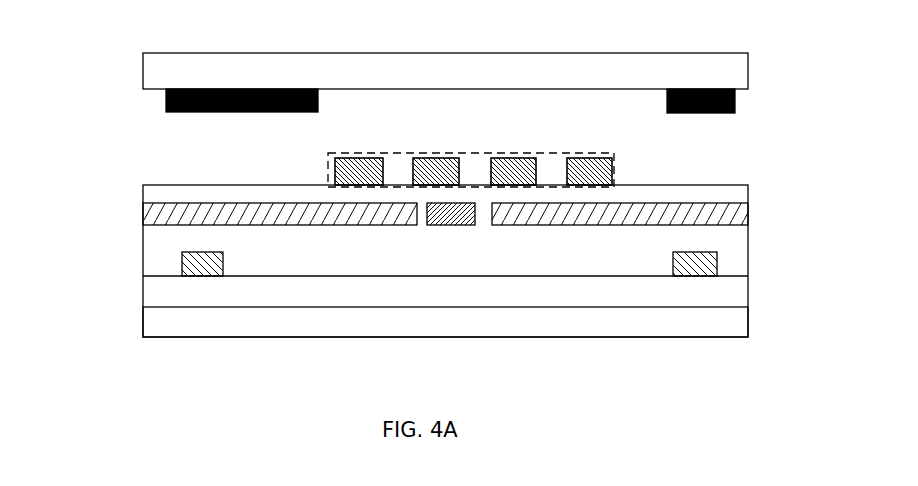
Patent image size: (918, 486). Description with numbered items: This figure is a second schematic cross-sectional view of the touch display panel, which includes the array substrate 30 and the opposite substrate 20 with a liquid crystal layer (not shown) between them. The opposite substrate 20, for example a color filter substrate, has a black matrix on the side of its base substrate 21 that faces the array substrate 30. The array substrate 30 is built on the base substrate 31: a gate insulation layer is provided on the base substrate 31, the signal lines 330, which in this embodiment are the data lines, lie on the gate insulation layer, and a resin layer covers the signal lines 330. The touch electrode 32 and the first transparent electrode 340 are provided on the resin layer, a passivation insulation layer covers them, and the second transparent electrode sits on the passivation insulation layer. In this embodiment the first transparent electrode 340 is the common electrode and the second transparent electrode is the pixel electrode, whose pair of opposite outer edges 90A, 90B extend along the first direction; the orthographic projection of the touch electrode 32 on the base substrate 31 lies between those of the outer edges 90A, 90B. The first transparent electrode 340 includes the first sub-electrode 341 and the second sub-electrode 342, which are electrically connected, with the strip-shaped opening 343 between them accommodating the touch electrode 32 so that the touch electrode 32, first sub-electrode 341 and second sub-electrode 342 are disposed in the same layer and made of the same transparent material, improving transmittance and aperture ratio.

The opposite substrate 20 is at (752, 50).
The base substrate 21 is at (150, 70).
The outer edge 90A is at (332, 184).
The outer edge 90B is at (622, 176).
The touch electrode 32 is at (474, 105).
The array substrate 30 is at (752, 162).
The base substrate 31 is at (160, 328).
The signal lines 330 is at (182, 262).
The first transparent electrode 340 is at (395, 291).
The first sub-electrode 341 is at (280, 298).
The second sub-electrode 342 is at (620, 298).
The strip-shaped opening 343 is at (466, 190).